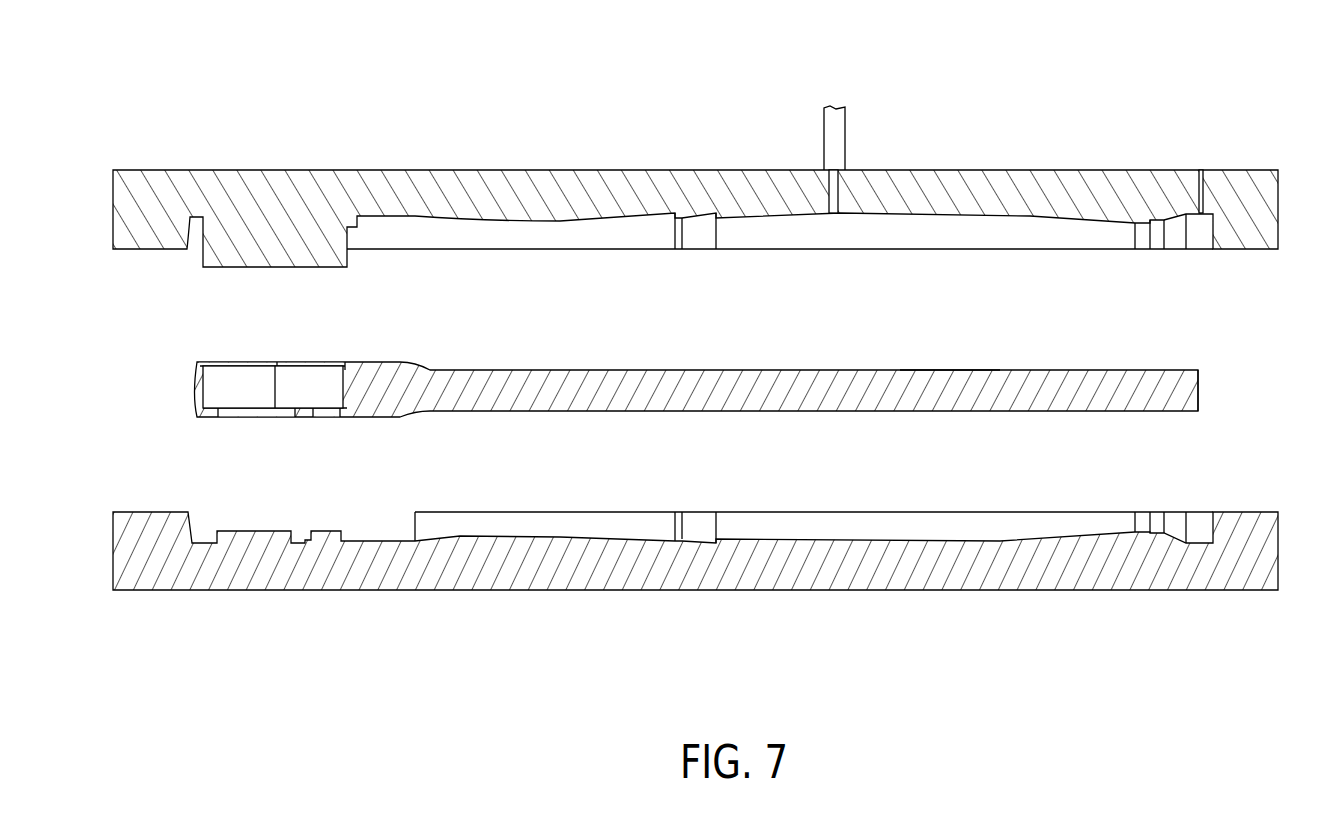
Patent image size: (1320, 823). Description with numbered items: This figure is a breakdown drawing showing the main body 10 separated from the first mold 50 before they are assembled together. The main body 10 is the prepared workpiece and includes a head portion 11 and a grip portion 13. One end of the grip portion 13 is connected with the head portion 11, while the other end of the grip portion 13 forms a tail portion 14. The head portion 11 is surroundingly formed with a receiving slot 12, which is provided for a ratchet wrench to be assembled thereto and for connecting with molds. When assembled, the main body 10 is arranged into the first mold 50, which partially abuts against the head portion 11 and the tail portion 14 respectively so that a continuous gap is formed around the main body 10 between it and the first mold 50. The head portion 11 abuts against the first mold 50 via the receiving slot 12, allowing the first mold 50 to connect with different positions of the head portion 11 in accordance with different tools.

The first mold 50 is at (662, 128).
The main body 10 is at (645, 345).
The head portion 11 is at (216, 370).
The receiving slot 12 is at (235, 380).
The grip portion 13 is at (950, 347).
The tail portion 14 is at (1172, 370).